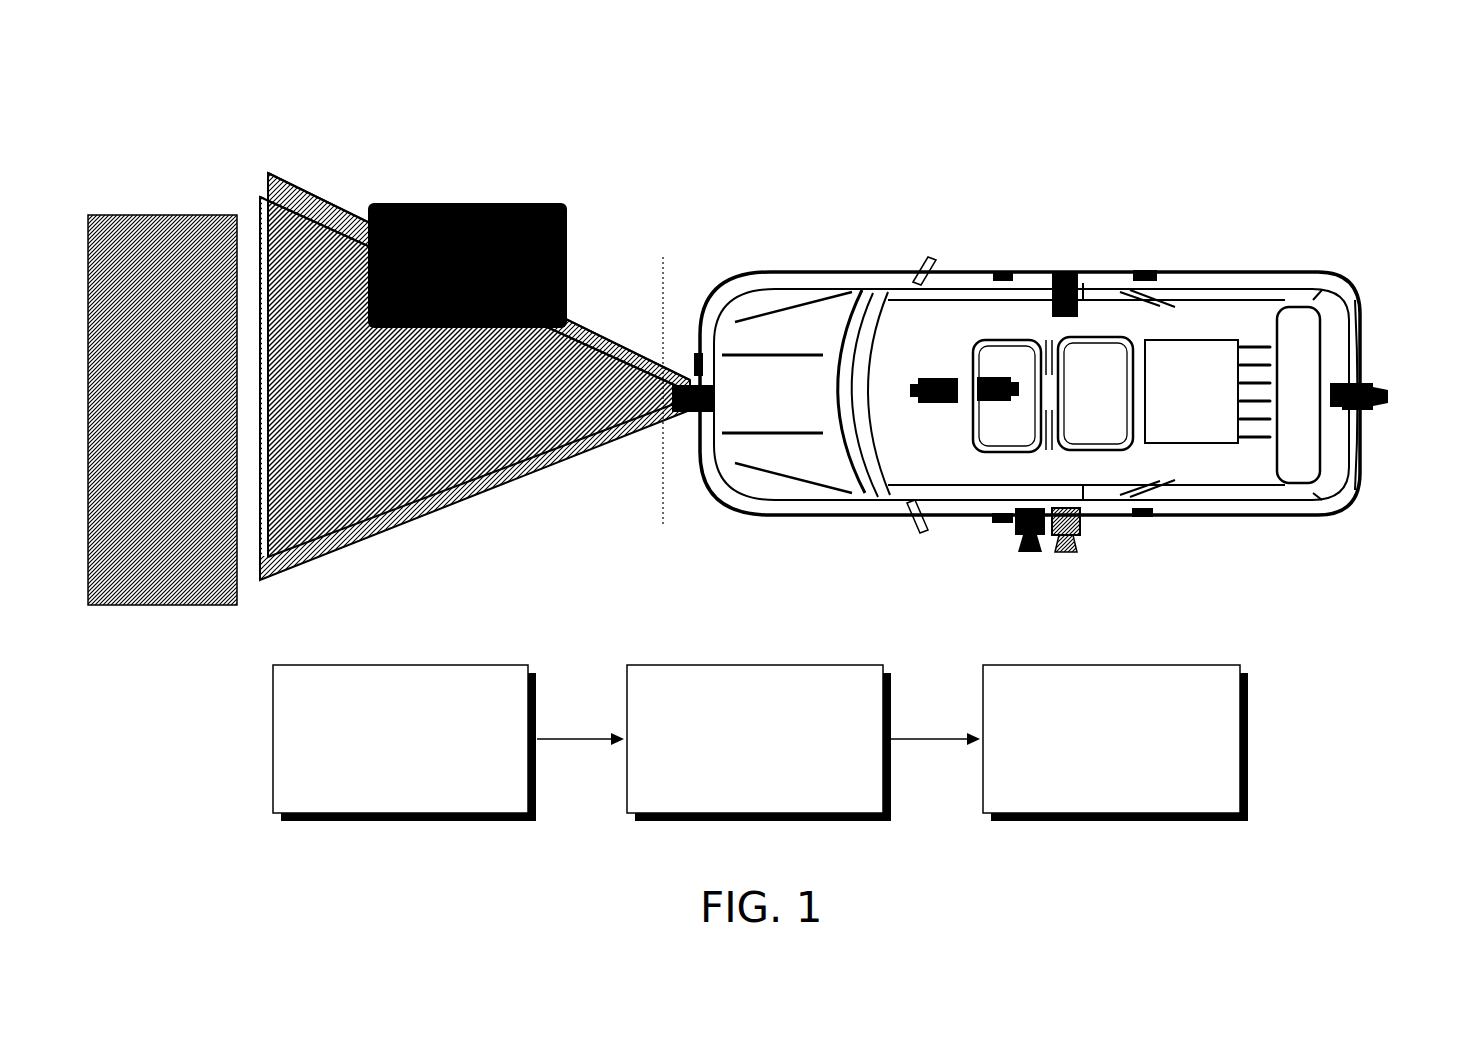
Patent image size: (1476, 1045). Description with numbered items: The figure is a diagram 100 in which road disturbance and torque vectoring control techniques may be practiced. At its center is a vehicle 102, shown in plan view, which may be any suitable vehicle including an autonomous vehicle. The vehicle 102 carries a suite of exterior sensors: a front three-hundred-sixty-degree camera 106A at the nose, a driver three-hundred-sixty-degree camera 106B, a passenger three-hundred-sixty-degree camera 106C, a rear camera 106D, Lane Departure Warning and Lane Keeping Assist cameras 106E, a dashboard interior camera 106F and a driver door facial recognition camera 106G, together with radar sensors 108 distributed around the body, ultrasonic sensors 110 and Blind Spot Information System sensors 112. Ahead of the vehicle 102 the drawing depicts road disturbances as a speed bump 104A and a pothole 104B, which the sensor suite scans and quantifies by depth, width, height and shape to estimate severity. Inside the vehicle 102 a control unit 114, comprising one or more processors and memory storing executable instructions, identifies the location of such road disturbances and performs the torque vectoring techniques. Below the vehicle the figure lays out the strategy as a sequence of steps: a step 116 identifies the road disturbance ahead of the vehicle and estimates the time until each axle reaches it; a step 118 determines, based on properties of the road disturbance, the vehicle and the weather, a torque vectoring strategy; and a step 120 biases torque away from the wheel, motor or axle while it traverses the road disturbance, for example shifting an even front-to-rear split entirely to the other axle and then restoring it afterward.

The diagram 100 is at (1306, 96).
The vehicle 102 is at (1315, 243).
The speed bump 104A is at (238, 186).
The pothole 104B is at (673, 215).
The front 360-degrees camera 106A is at (680, 410).
The driver 360-degrees camera 106B is at (1017, 530).
The passenger 360-degrees camera 106C is at (1070, 272).
The rear camera 106D is at (1461, 441).
The Lane Departure Warning and Lane Keeping Assist camera 106E is at (932, 378).
The dashboard interior camera 106F is at (995, 378).
The driver door facial recognition camera 106G is at (1080, 533).
The radar sensors 108 is at (695, 355).
The ultrasonic sensors 110 is at (1406, 329).
The Blind Spot Information System sensors 112 is at (1313, 300).
The control unit 114 is at (1174, 429).
The step to identify a road disturbance 116 is at (383, 790).
The step to determine a torque vectoring strategy 118 is at (872, 790).
The step to bias torque while traversing the road disturbance 120 is at (1225, 790).